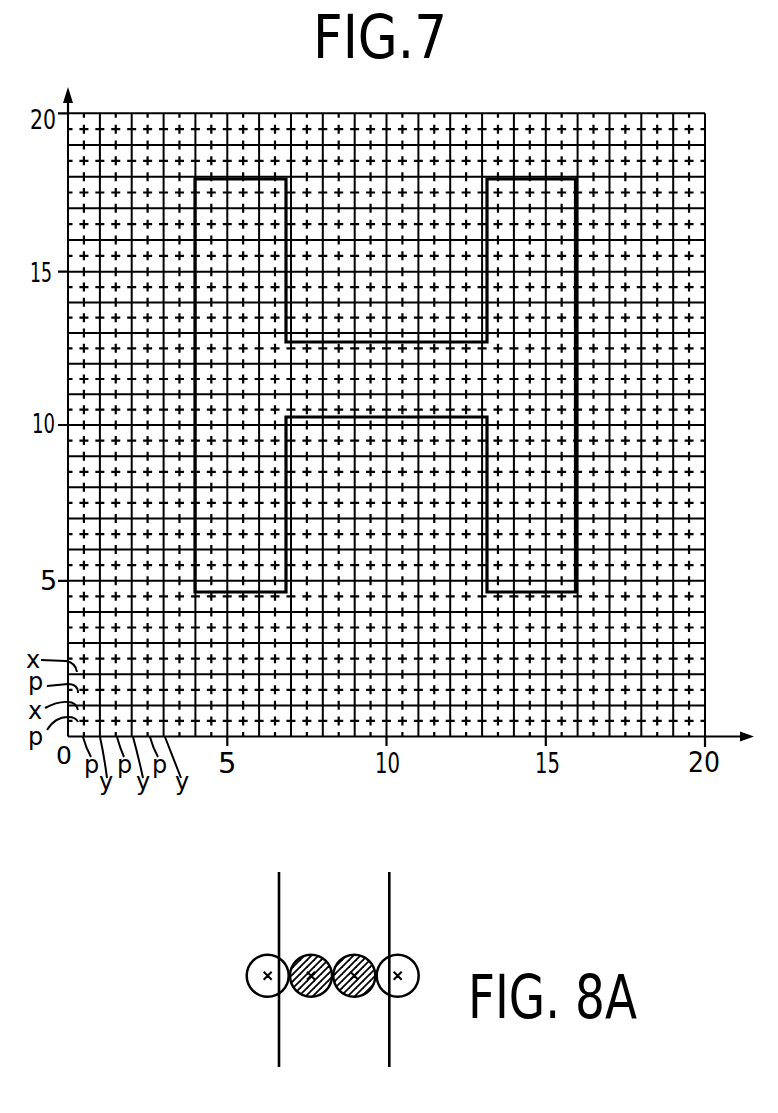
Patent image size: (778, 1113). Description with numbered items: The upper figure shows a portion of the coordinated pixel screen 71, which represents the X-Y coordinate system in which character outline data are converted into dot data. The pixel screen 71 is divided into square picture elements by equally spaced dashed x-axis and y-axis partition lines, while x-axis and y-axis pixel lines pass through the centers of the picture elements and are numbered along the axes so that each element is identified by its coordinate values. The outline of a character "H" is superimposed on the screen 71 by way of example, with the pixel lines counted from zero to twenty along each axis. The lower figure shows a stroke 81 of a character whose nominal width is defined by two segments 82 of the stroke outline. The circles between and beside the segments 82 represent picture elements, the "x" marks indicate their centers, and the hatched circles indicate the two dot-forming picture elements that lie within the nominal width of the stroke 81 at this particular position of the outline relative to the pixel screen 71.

In FIG. 7, the coordinated pixel screen 71 is at (647, 112).
In FIG. 8A, the stroke 81 is at (378, 1044).
In FIG. 8A, the segments of the outline 82 is at (278, 898).